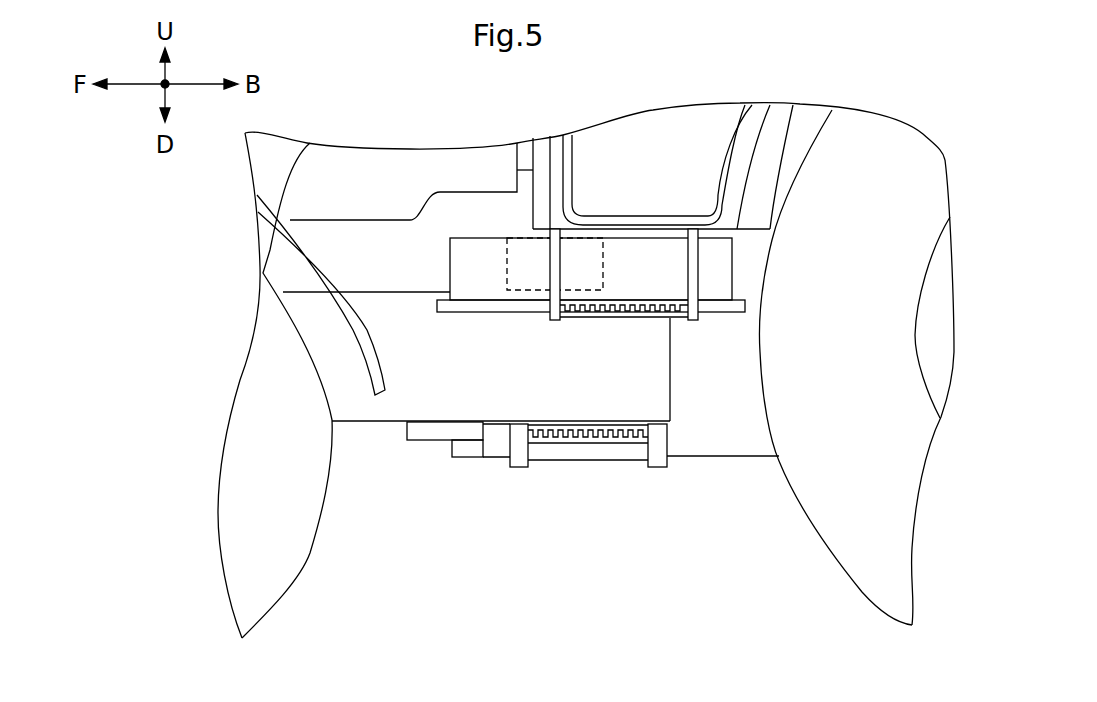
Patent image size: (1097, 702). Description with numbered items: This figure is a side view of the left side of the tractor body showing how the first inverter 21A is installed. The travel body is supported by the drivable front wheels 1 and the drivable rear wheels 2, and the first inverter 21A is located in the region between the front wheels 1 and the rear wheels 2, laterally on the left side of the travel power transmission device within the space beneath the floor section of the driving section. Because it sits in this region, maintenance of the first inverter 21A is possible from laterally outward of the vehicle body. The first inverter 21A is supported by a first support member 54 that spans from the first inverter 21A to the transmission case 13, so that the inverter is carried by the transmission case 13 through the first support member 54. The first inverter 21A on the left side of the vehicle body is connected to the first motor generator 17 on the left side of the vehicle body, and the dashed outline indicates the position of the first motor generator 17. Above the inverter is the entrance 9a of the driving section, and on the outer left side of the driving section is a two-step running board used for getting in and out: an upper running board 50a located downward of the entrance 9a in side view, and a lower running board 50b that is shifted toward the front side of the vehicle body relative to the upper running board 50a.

The front wheel 1 is at (307, 557).
The rear wheel 2 is at (830, 550).
The entrance 9a is at (626, 162).
The transmission case 13 is at (717, 443).
The first motor generator 17 is at (507, 257).
The first inverter 21A is at (482, 275).
The upper running board 50a is at (622, 313).
The lower running board 50b is at (562, 442).
The first support member 54 is at (720, 312).